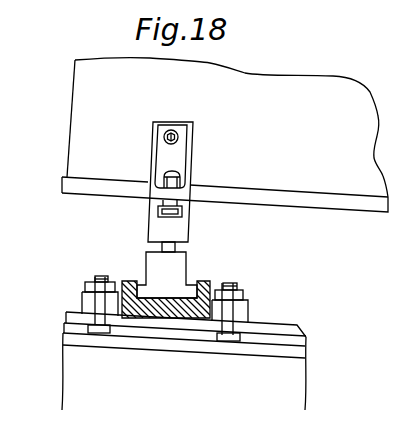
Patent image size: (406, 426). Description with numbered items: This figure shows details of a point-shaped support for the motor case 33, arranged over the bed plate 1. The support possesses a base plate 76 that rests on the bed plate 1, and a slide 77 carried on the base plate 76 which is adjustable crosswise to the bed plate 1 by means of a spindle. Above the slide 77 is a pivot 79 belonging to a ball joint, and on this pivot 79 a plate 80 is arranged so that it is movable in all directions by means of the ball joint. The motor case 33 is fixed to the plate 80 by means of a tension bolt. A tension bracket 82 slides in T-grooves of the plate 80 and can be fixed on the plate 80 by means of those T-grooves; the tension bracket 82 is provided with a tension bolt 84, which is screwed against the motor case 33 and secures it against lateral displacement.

The bed plate 1 is at (297, 374).
The motor case 33 is at (260, 85).
The base plate 76 is at (150, 302).
The slide 77 is at (178, 270).
The pivot 79 is at (165, 247).
The plate 80 is at (188, 228).
The tension bracket 82 is at (180, 158).
The tension bolt 84 is at (174, 130).